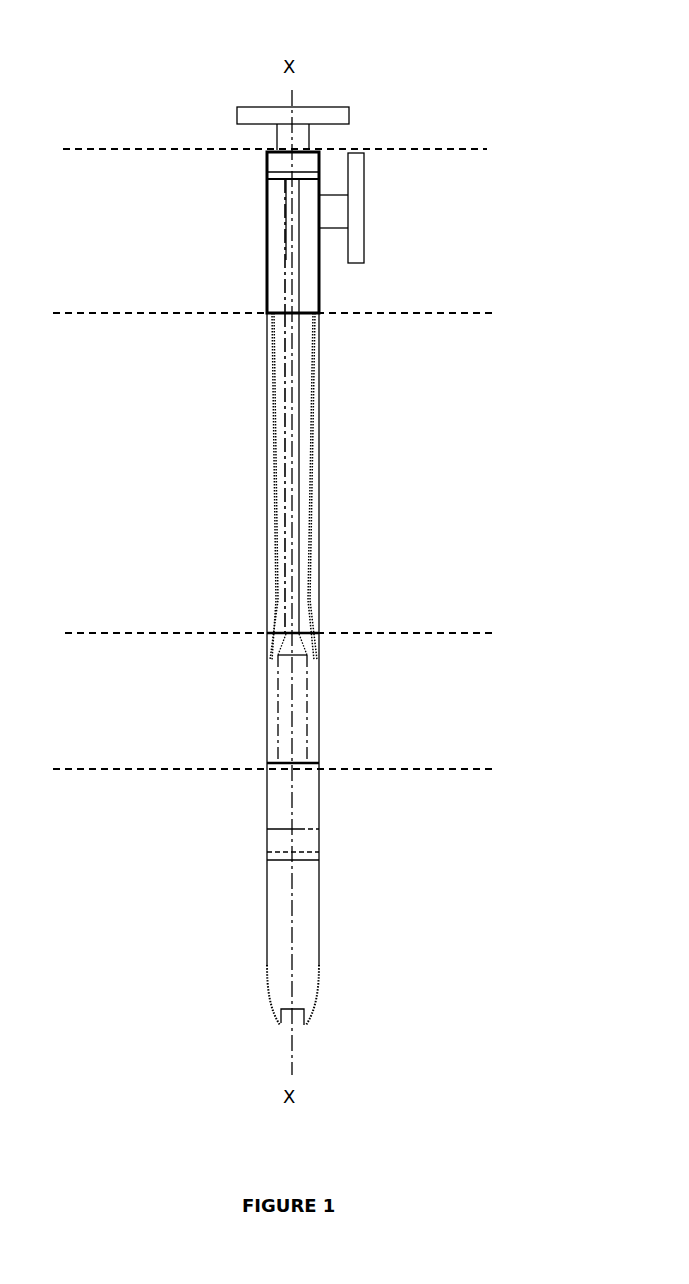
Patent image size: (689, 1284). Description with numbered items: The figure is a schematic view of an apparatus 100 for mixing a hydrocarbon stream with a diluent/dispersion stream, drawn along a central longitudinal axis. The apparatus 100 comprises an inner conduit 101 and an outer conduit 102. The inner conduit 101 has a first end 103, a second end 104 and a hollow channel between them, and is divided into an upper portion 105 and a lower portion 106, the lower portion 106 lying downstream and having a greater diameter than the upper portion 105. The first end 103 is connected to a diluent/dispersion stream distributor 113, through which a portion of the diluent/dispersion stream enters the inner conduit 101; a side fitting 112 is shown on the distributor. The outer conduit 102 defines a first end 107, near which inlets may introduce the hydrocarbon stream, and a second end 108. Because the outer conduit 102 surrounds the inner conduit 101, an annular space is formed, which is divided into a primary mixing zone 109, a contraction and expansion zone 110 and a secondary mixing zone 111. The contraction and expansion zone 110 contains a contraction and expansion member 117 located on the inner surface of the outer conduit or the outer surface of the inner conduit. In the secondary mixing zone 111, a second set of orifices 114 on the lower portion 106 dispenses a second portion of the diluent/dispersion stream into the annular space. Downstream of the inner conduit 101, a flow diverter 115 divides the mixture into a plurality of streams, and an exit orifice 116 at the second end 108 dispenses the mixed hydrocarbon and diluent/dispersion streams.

The apparatus 100 is at (352, 58).
The inner conduit 101 is at (287, 262).
The outer conduit 102 is at (267, 372).
The first end 103 is at (268, 179).
The second end 104 is at (305, 763).
The upper portion 105 is at (131, 150).
The lower portion 106 is at (131, 768).
The first end 107 is at (268, 150).
The second end 108 is at (308, 1020).
The primary mixing zone 109 is at (76, 150).
The contraction and expansion zone 110 is at (73, 314).
The secondary mixing zone 111 is at (72, 634).
The side bracket / connector 112 is at (320, 177).
The diluent/dispersion stream distributor 113 is at (318, 173).
The second set of orifices 114 is at (297, 706).
The flow diverter 115 is at (307, 861).
The exit orifice 116 is at (278, 1022).
The contraction and expansion member 117 is at (305, 466).